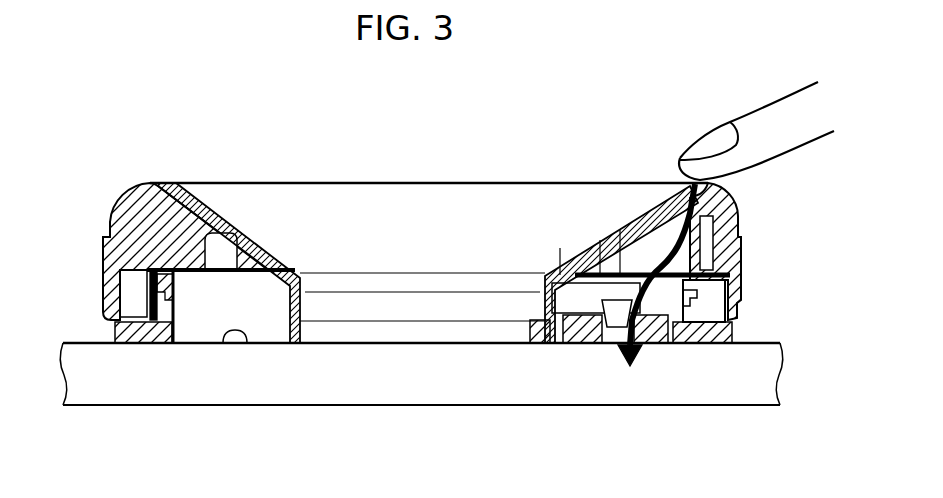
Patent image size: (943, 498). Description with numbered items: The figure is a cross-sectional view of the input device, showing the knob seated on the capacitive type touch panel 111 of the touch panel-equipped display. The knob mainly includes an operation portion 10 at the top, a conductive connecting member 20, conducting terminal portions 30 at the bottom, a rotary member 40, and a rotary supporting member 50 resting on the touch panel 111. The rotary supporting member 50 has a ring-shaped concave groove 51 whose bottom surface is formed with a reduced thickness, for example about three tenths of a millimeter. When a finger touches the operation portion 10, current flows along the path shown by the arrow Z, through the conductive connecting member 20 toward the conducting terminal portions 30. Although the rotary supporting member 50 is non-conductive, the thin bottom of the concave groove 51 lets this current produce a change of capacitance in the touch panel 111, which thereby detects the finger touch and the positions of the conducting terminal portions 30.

The operation portion 10 is at (742, 199).
The conductive connecting member 20 is at (638, 285).
The conducting terminal portions 30 is at (657, 346).
The rotary member 40 is at (237, 278).
The rotary supporting member 50 is at (122, 336).
The concave groove 51 is at (250, 346).
The touch panel 111 is at (200, 393).
The arrow Z is at (683, 222).